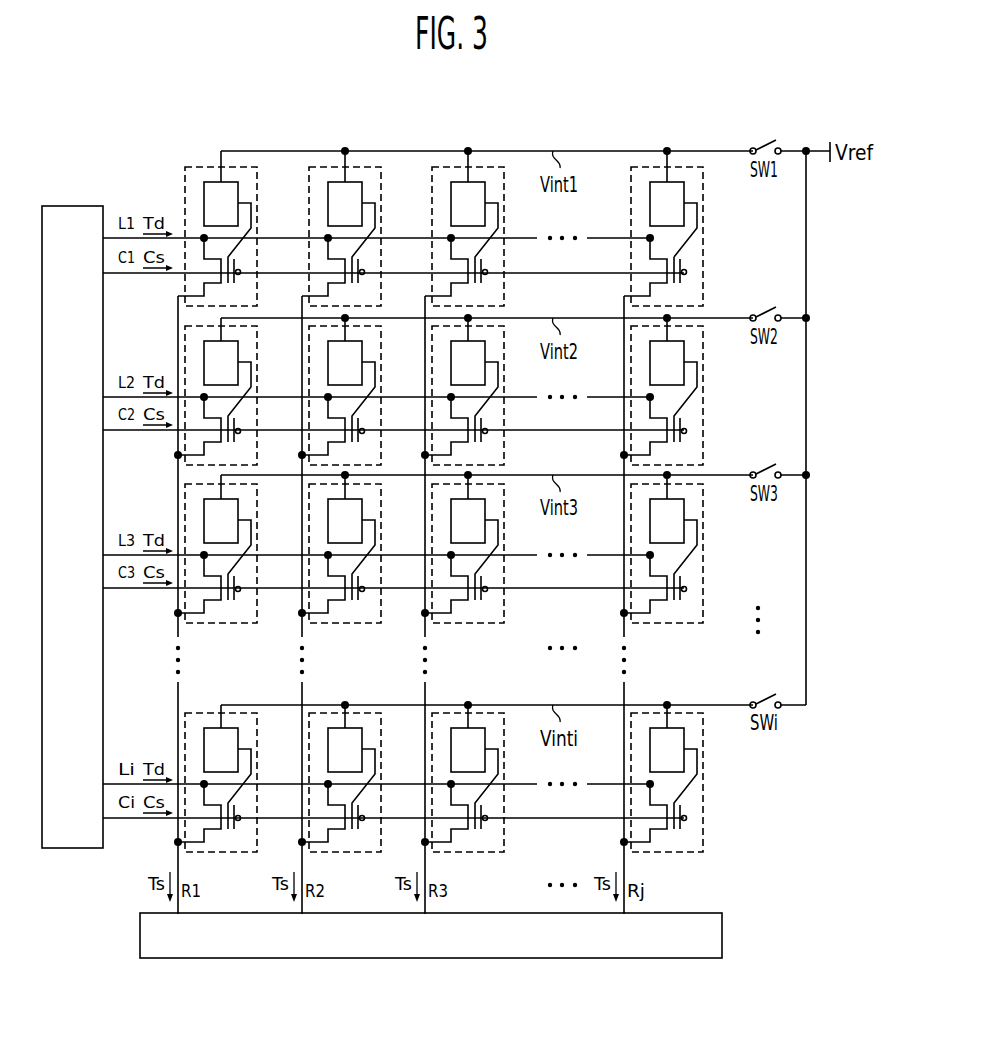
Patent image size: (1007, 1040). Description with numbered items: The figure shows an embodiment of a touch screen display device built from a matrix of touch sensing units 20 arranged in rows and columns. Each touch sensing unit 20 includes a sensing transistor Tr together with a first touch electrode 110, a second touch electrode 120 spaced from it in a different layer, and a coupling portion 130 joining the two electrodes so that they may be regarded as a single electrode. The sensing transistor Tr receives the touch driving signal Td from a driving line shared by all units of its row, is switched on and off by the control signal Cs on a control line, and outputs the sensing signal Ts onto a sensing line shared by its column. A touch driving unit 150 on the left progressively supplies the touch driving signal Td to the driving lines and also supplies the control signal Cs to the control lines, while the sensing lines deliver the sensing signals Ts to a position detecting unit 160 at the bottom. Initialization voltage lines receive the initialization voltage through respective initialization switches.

The touch sensing unit 20 is at (690, 167).
The first touch electrode 110 is at (676, 288).
The second touch electrode 120 is at (650, 200).
The coupling portion 130 is at (698, 213).
The touch driving unit 150 is at (72, 206).
The position detecting unit 160 is at (585, 958).